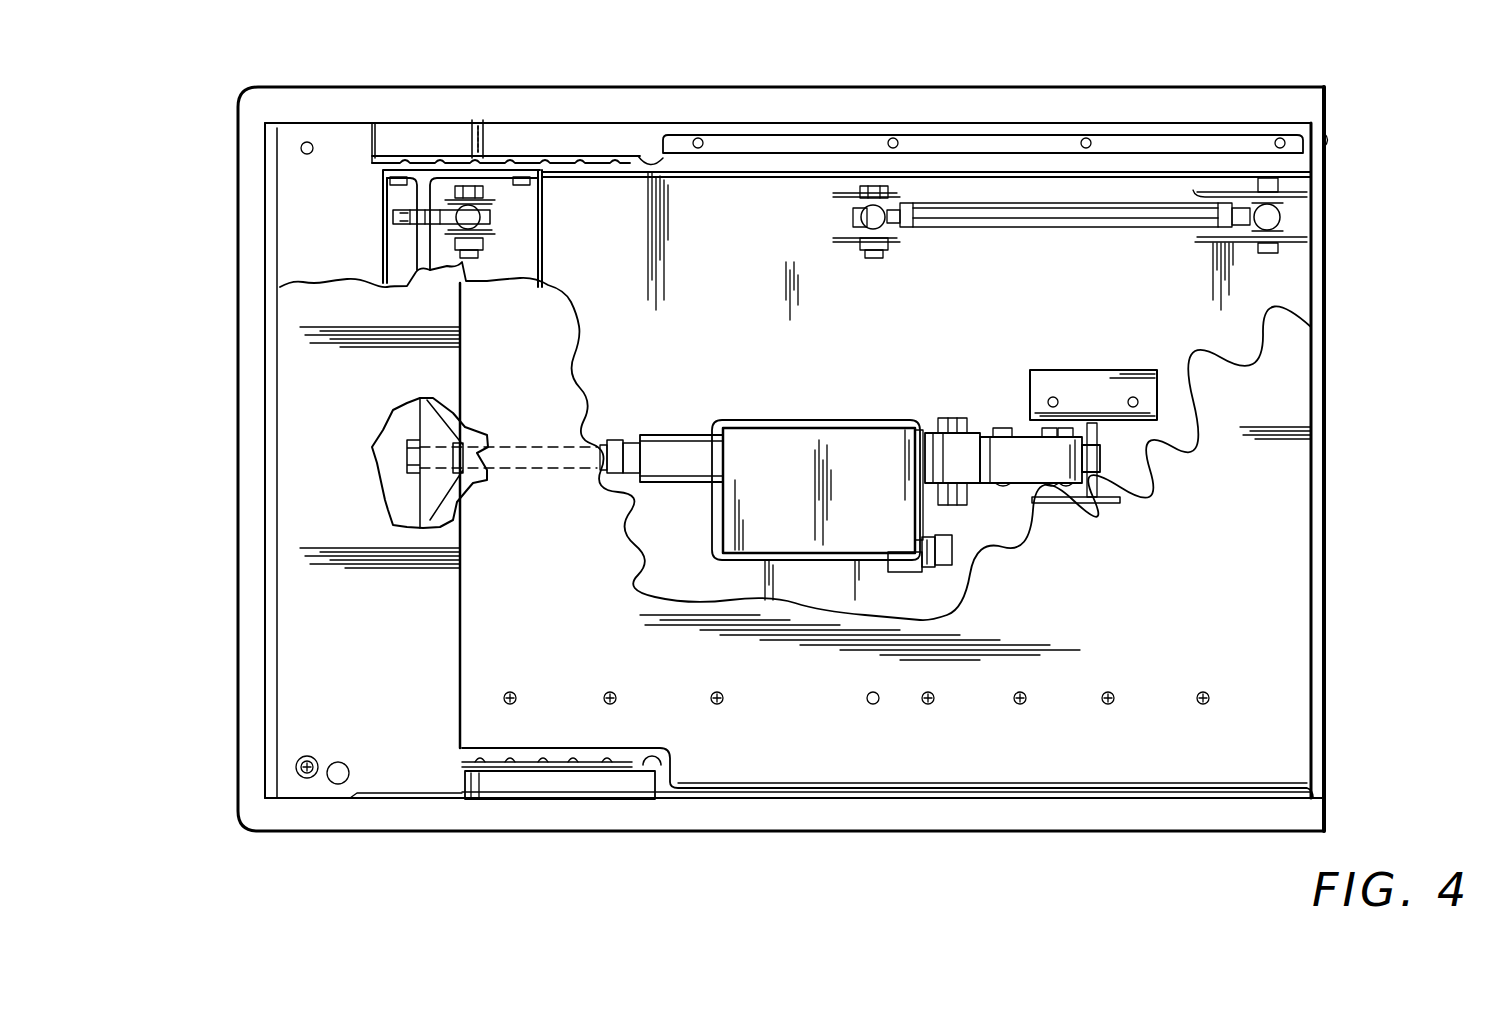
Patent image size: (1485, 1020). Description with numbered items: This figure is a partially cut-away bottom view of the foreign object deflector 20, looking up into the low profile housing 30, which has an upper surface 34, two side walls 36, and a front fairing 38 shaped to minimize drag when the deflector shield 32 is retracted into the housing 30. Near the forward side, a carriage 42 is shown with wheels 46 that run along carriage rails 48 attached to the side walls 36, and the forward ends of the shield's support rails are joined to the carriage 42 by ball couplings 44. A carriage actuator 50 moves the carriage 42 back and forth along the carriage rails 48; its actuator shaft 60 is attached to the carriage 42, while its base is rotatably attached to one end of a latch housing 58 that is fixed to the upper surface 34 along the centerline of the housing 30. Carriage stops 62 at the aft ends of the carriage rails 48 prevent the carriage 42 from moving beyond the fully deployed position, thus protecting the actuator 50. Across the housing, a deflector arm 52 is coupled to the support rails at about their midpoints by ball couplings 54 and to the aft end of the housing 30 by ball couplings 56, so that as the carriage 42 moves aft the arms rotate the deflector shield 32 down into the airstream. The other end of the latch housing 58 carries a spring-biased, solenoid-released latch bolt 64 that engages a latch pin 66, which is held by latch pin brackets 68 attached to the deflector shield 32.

The foreign object deflector 20 is at (1352, 161).
The low profile housing 30 is at (1318, 308).
The deflector shield 32 is at (1168, 635).
The upper surface 34 is at (738, 307).
The side walls 36 is at (945, 88).
The front fairing 38 is at (237, 745).
The carriage 42 is at (387, 258).
The ball couplings 44 is at (500, 216).
The wheels 46 is at (404, 162).
The carriage rails 48 is at (546, 797).
The carriage actuator 50 is at (814, 422).
The deflector arms 52 is at (1018, 232).
The ball couplings 54 is at (842, 220).
The ball couplings 56 is at (1298, 213).
The latch housing 58 is at (1023, 428).
The actuator shaft 60 is at (597, 440).
The carriage stops 62 is at (651, 158).
The latch bolt 64 is at (1100, 462).
The latch pin 66 is at (1102, 498).
The latch pin brackets 68 is at (1098, 372).